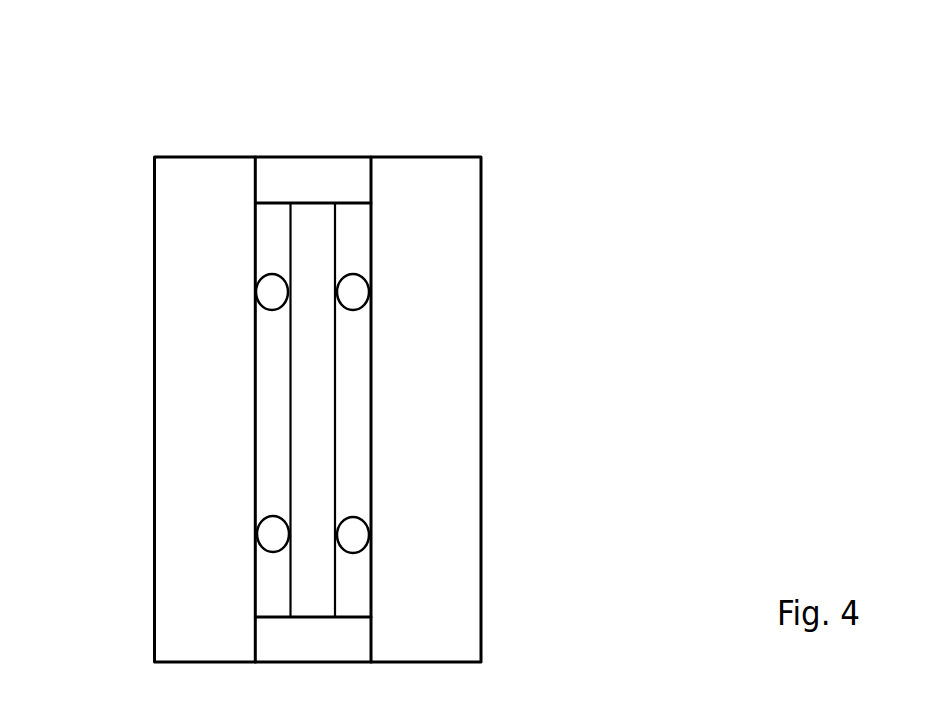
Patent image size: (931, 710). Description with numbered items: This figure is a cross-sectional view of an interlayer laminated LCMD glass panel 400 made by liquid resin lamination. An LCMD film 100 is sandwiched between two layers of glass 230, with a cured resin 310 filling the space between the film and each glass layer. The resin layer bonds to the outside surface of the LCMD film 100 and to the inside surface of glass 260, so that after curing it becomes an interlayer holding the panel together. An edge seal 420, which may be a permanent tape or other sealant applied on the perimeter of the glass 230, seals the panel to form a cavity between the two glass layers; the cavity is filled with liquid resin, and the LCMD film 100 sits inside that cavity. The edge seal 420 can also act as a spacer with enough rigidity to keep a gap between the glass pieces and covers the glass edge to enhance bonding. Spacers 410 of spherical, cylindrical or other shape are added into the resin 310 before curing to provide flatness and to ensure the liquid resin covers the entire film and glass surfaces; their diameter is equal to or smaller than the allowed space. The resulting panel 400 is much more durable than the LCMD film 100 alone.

The LCMD film 100 is at (313, 242).
The glass 230 is at (172, 183).
The inside surface of glass 260 is at (150, 225).
The cured resin 310 is at (273, 458).
The interlayer laminated LCMD glass panel 400 is at (758, 163).
The spacer 410 is at (268, 293).
The edge seal 420 is at (338, 177).